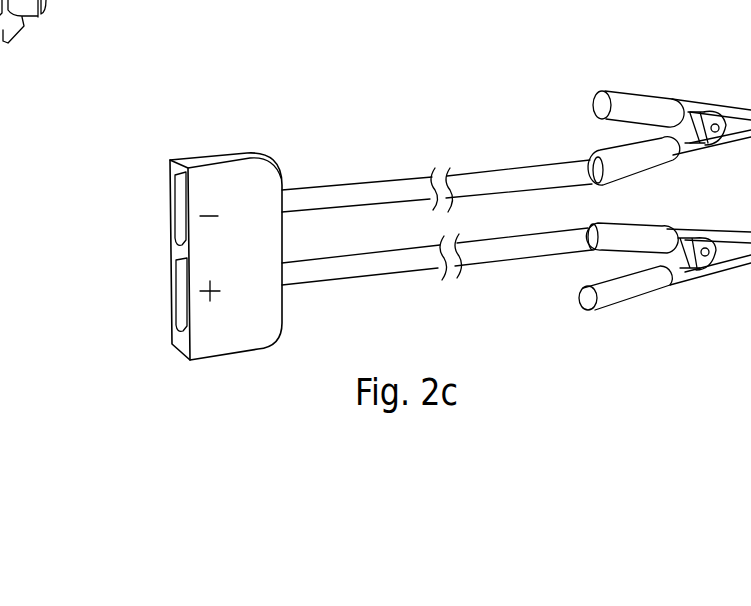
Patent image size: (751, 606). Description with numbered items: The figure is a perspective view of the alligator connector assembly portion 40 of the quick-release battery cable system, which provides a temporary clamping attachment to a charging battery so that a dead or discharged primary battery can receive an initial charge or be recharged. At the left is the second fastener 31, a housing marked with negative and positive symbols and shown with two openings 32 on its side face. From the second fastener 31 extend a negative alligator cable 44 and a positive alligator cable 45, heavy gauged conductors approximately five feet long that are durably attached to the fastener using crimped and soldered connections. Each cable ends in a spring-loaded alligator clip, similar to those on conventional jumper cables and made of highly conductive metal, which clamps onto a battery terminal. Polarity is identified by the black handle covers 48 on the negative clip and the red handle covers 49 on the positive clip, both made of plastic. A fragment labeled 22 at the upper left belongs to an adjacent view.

The adjacent figure fragment 22 is at (43, 0).
The alligator connector assembly portion 40 is at (333, 76).
The second fastener 31 is at (243, 192).
The recesses 32 is at (180, 312).
The negative alligator cable 44 is at (472, 183).
The positive alligator cable 45 is at (478, 255).
The negative black handle covers 48 is at (602, 160).
The positive red handle covers 49 is at (620, 287).